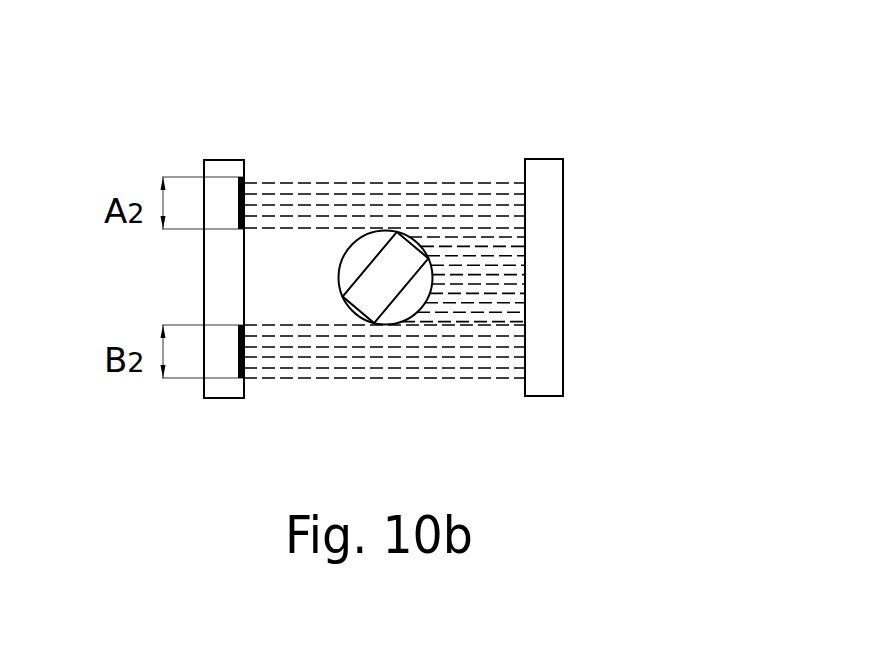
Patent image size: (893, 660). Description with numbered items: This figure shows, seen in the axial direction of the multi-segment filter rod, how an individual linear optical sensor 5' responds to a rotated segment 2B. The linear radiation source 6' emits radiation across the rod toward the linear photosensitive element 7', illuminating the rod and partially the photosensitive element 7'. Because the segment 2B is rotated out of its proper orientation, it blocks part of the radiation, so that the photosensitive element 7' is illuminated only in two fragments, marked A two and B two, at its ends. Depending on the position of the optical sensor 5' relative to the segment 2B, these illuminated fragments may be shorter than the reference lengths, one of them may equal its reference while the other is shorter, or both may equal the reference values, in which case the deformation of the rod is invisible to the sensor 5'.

The linear photosensitive element 7' is at (175, 216).
The linear radiation source 6' is at (484, 217).
The linear sensor 5' is at (665, 130).
The segment 2B is at (398, 278).